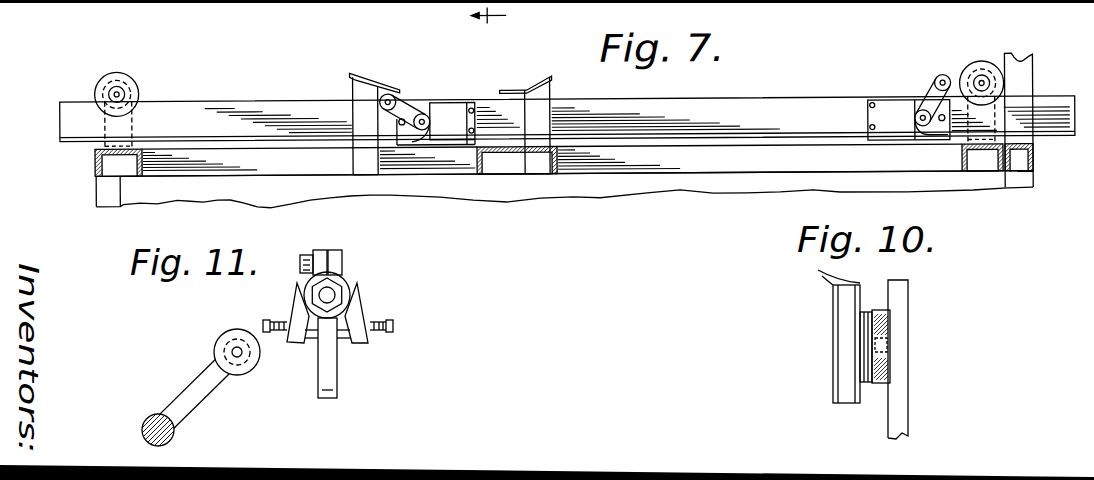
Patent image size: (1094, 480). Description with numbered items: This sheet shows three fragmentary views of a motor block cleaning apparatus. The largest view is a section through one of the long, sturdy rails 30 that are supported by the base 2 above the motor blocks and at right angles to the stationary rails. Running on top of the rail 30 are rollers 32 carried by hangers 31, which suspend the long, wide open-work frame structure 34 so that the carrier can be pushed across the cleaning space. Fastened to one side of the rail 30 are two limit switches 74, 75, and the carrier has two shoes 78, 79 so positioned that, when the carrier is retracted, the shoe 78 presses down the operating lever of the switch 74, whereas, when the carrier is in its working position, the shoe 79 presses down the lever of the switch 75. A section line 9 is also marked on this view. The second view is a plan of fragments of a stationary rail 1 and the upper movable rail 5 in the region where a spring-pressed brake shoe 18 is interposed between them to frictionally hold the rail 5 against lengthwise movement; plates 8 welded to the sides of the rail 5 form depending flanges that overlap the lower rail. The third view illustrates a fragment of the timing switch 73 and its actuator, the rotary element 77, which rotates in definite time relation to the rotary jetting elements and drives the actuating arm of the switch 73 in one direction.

In FIG. 10, the stationary rail 1 is at (903, 328).
In FIG. 7, the base 2 is at (728, 192).
In FIG. 10, the upper rail 5 is at (845, 303).
In FIG. 10, the plate 8 is at (838, 271).
In FIG. 7, the recess 9 is at (494, 15).
In FIG. 10, the brake shoe 18 is at (862, 342).
In FIG. 7, the rail 30 is at (263, 108).
In FIG. 7, the hanger 31 is at (133, 118).
In FIG. 7, the roller 32 is at (135, 80).
In FIG. 7, the open-work frame structure 34 is at (630, 167).
In FIG. 11, the limit switch 73 is at (205, 367).
In FIG. 7, the limit switch 74 is at (447, 108).
In FIG. 7, the limit switch 75 is at (893, 106).
In FIG. 11, the rotary element 77 is at (335, 368).
In FIG. 7, the shoe 78 is at (362, 84).
In FIG. 7, the shoe 79 is at (540, 80).